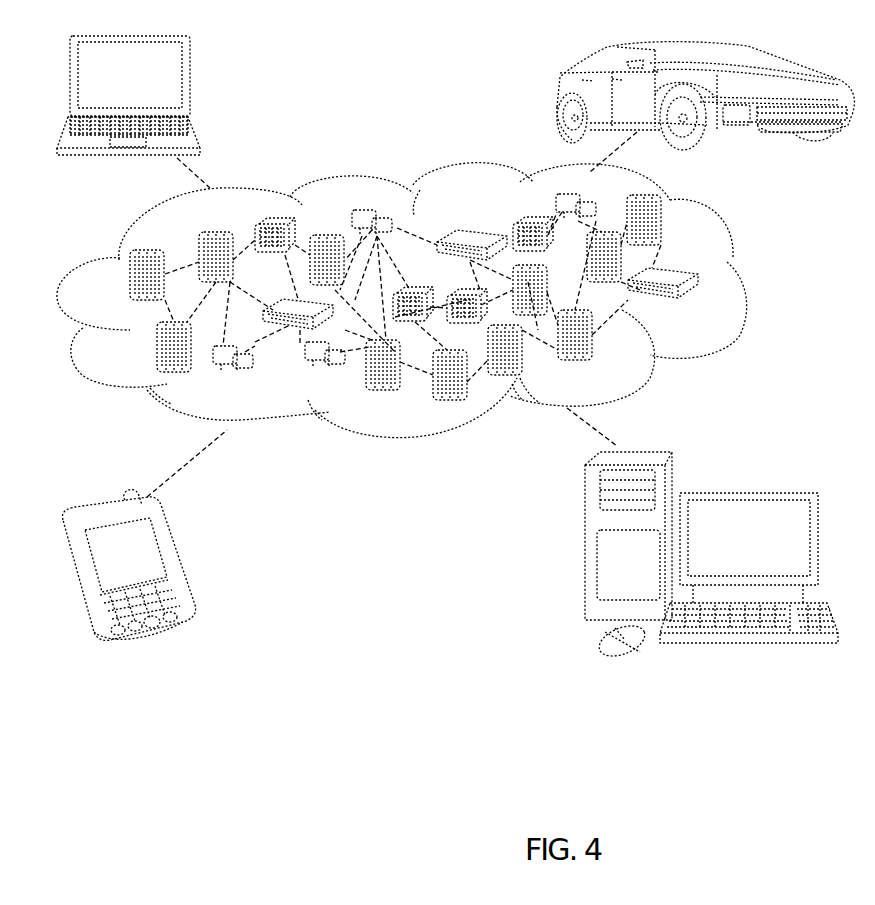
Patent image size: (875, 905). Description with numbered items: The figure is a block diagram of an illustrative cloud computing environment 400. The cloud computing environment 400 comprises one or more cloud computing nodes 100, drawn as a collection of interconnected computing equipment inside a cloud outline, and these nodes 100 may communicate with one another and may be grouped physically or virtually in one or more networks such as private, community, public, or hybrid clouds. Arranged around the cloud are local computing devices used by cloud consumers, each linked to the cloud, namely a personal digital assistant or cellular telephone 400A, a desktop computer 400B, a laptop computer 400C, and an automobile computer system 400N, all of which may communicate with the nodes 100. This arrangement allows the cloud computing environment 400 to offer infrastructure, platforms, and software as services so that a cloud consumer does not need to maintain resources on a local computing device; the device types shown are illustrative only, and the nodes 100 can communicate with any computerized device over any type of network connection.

The cloud computing environment 400 is at (738, 282).
The cloud computing nodes 100 is at (697, 302).
The personal digital assistant (PDA) or cellular telephone 400A is at (185, 563).
The desktop computer 400B is at (745, 493).
The laptop computer 400C is at (190, 84).
The automobile computer system 400N is at (562, 96).